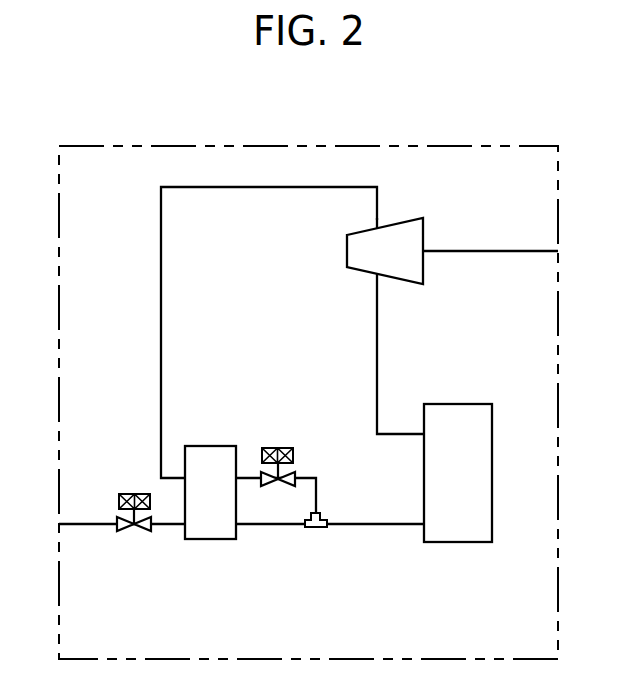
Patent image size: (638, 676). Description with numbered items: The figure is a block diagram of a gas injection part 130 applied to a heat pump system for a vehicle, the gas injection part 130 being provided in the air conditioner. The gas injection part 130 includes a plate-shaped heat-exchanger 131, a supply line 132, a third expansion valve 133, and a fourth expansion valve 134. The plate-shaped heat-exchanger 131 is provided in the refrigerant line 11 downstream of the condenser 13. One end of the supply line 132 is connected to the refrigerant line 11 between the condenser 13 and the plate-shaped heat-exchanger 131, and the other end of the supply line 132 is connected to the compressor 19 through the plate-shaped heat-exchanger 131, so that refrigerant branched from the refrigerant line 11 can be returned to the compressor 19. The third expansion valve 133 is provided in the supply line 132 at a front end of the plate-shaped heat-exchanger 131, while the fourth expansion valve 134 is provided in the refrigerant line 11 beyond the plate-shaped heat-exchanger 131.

The refrigerant line 11 is at (489, 249).
The condenser 13 is at (493, 473).
The compressor 19 is at (347, 251).
The gas injection part 130 is at (216, 544).
The plate-shaped heat-exchanger 131 is at (222, 541).
The supply line 132 is at (176, 480).
The third expansion valve 133 is at (273, 488).
The fourth expansion valve 134 is at (129, 547).